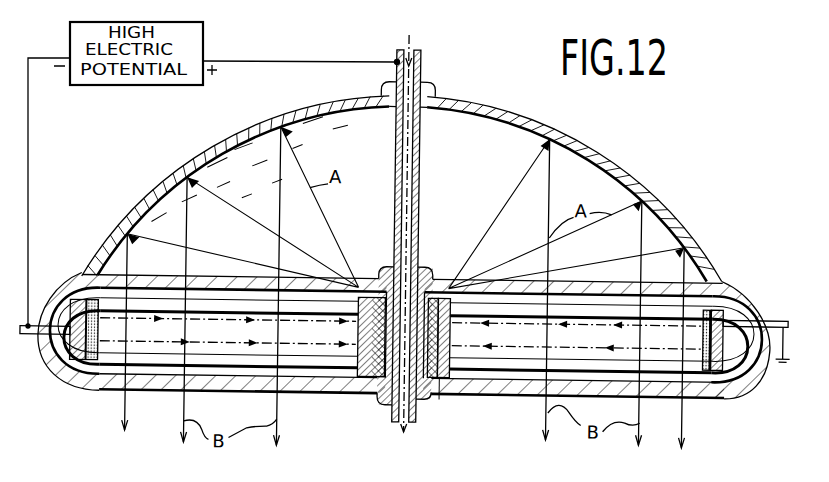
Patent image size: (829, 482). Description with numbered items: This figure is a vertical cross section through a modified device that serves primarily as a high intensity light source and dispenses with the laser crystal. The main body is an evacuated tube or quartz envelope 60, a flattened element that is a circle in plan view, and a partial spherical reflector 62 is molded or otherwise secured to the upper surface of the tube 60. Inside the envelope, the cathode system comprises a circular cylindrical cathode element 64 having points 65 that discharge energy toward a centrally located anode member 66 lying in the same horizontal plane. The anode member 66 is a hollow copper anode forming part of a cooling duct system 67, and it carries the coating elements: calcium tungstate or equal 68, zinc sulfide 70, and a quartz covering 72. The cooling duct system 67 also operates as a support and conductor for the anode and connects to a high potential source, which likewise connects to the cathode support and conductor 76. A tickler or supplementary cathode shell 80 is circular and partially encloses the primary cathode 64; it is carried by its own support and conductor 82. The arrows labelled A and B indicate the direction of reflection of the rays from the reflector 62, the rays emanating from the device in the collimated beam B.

The evacuated tube or quartz envelope 60 is at (310, 284).
The partial spherical reflector 62 is at (678, 215).
The circular cylindrical cathode element 64 is at (724, 341).
The points 65 is at (709, 366).
The anode member 66 is at (442, 401).
The cooling duct system 67 is at (417, 215).
The calcium tungstate coating element 68 is at (436, 380).
The zinc sulfide coating 70 is at (448, 382).
The quartz covering 72 is at (448, 388).
The cathode support and conductor 76 is at (52, 295).
The tickler or supplementary cathode shell 80 is at (82, 396).
The support and conductor 82 is at (763, 308).